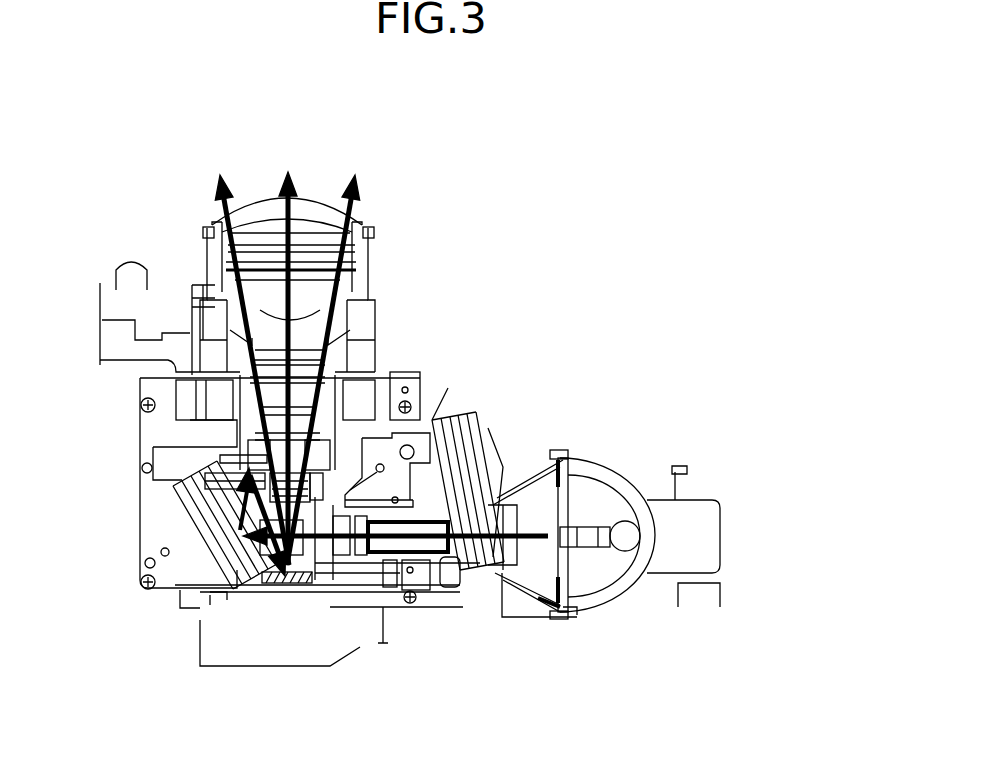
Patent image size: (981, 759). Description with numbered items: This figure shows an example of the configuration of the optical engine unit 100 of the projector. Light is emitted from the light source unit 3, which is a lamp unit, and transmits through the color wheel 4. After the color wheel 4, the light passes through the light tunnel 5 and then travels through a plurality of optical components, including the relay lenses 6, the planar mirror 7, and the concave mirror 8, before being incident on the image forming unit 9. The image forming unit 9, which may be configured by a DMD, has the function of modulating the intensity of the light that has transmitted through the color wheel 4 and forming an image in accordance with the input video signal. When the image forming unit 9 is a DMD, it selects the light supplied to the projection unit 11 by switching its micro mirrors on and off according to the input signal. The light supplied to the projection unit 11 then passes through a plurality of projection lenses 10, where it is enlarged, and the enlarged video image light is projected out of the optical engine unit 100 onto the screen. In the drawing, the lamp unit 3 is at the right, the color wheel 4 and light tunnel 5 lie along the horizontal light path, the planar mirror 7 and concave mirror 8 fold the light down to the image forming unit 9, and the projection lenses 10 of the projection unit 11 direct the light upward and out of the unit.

The optical engine unit 100 is at (651, 150).
The light source unit 3 is at (630, 612).
The color wheel 4 is at (494, 459).
The light tunnel 5 is at (420, 558).
The relay lenses 6 is at (362, 563).
The planar mirror 7 is at (228, 544).
The concave mirror 8 is at (214, 484).
The image forming unit 9 is at (273, 594).
The projection lenses 10 is at (320, 200).
The projection unit 11 is at (385, 290).